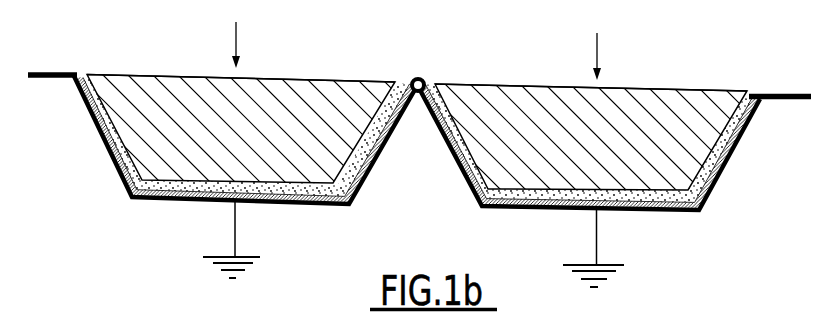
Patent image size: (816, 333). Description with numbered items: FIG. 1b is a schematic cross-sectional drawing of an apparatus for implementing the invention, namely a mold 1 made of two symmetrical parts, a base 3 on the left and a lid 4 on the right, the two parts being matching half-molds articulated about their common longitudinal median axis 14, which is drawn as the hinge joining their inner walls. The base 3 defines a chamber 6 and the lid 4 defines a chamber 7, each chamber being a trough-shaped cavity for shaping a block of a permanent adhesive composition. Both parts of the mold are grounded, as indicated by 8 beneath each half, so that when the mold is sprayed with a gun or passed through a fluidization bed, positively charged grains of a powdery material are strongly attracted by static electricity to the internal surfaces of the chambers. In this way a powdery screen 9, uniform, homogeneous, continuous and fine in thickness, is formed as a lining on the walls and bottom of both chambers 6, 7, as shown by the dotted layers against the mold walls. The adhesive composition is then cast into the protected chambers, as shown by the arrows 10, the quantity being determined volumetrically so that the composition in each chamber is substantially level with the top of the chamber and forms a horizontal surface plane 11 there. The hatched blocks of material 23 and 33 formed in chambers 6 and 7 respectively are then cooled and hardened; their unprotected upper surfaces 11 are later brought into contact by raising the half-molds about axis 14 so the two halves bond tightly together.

The mold 1 is at (88, 134).
The base 3 is at (102, 149).
The lid 4 is at (730, 162).
The chamber 6 is at (167, 184).
The chamber 7 is at (515, 200).
The grounding 8 is at (235, 235).
The powdery screen 9 is at (303, 192).
The casting arrows 10 is at (238, 42).
The surface plane 11 is at (313, 80).
The longitudinal median axis 14 is at (419, 77).
The block of material 23 is at (143, 97).
The block of material 33 is at (503, 97).